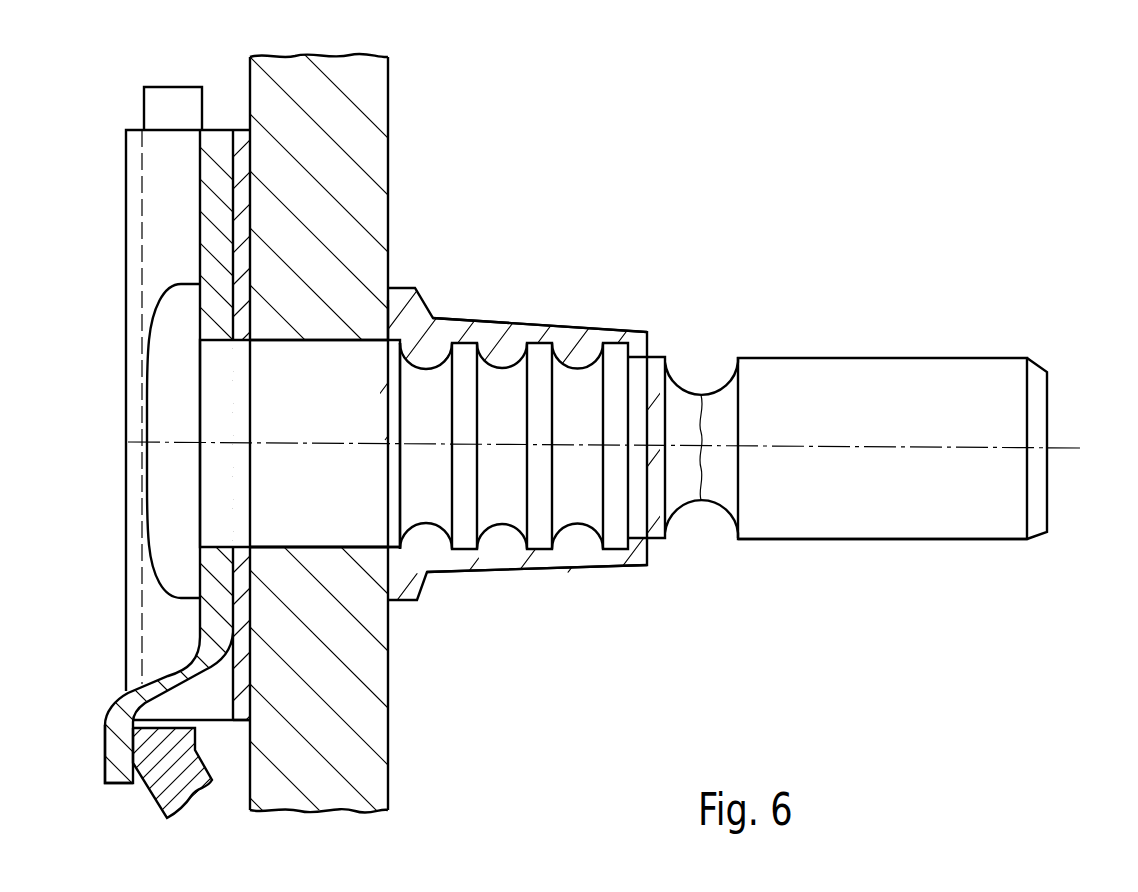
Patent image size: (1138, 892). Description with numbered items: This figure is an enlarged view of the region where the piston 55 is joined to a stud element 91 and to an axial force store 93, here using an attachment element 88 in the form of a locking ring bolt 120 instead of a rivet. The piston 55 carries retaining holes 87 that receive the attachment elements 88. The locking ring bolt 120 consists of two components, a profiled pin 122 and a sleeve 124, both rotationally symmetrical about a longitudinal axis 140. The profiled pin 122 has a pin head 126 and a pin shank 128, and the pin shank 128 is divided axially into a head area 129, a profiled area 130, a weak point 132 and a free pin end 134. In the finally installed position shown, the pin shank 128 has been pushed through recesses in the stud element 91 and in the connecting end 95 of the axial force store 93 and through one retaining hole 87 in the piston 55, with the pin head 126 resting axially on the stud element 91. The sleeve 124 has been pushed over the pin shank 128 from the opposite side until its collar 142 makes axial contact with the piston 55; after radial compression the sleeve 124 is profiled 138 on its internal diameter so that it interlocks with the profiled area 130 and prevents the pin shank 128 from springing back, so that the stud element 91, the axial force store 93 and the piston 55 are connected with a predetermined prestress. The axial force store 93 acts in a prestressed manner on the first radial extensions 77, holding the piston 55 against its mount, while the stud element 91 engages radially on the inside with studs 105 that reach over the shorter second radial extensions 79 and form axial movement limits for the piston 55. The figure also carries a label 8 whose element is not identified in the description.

The nut top surface 8 is at (515, 338).
The piston 55 is at (370, 107).
The first radial extensions 77 is at (162, 105).
The second radial extensions 79 is at (163, 781).
The retaining holes 87 is at (362, 338).
The attachment elements 88 is at (347, 370).
The stud element 91 is at (223, 145).
The axial force store 93 is at (137, 165).
The connecting end 95 is at (242, 252).
The stud 105 is at (119, 728).
The locking ring bolt 120 is at (602, 308).
The profiled pin 122 is at (826, 543).
The sleeve 124 is at (548, 569).
The pin head 126 is at (160, 511).
The pin shank 128 is at (280, 345).
The head area 129 is at (340, 527).
The profiled area 130 is at (481, 528).
The weak point 132 is at (702, 395).
The free pin end 134 is at (895, 378).
The profiling 138 is at (425, 362).
The longitudinal axis 140 is at (1060, 450).
The collar 142 is at (413, 313).